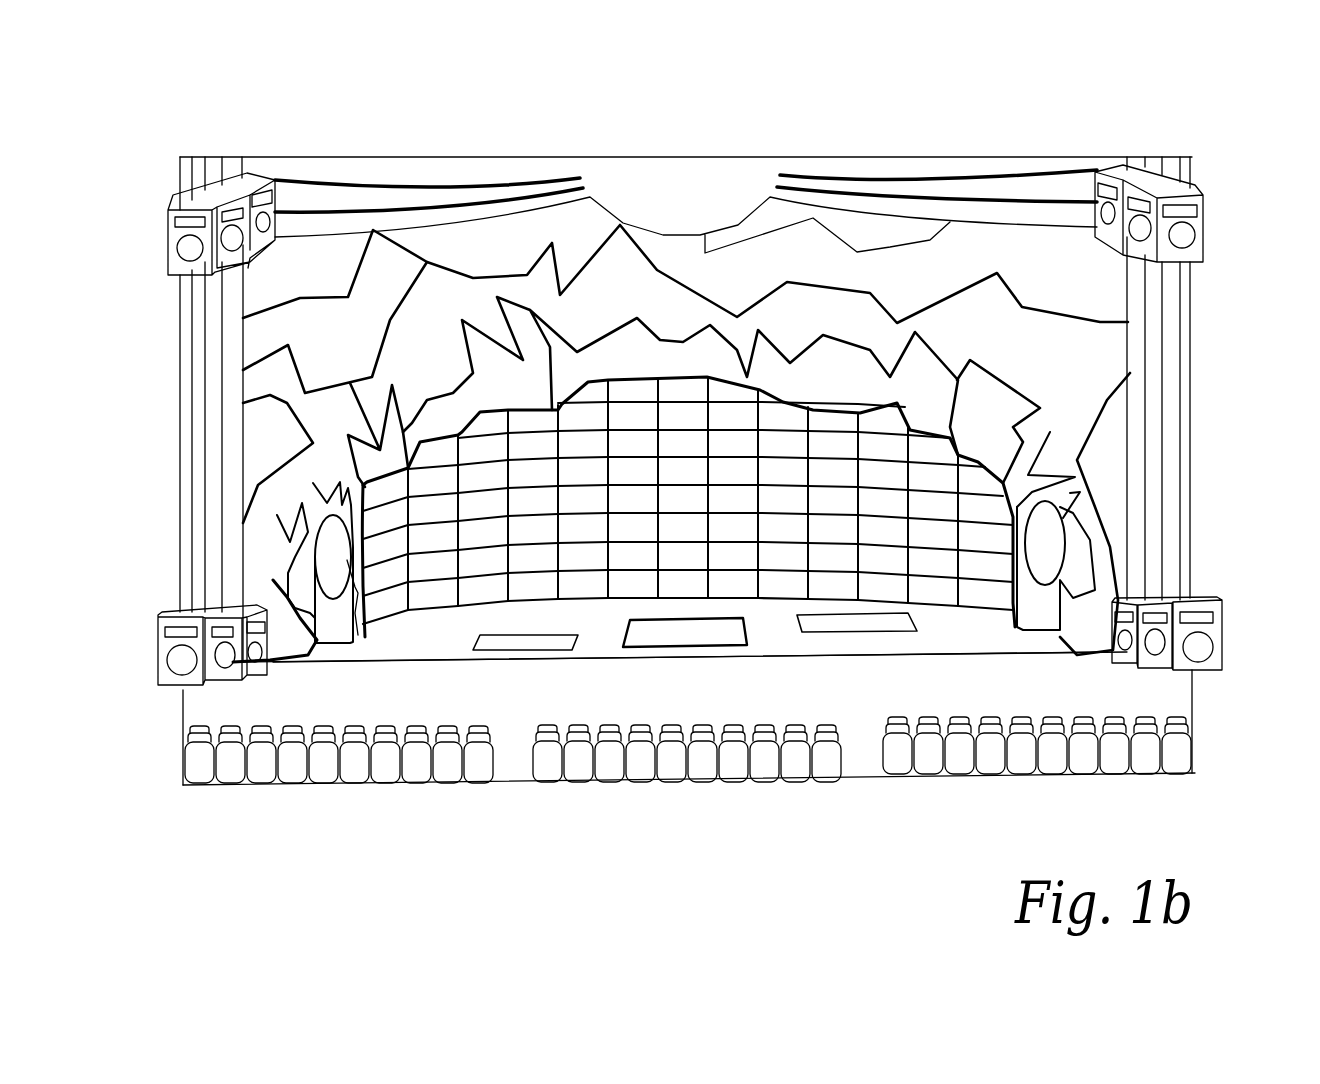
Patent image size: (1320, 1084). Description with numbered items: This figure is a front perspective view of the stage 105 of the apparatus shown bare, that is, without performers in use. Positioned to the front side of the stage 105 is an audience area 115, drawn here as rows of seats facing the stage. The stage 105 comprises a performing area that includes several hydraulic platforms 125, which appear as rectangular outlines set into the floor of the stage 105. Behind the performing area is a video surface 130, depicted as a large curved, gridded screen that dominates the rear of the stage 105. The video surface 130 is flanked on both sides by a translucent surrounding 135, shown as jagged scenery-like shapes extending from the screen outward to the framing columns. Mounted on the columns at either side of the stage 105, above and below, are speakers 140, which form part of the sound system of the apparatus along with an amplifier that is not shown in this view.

The stage 105 is at (418, 650).
The audience area 115 is at (1183, 775).
The hydraulic platforms 125 is at (863, 625).
The video surface 130 is at (697, 455).
The translucent surrounding 135 is at (990, 313).
The speakers 140 is at (1218, 612).